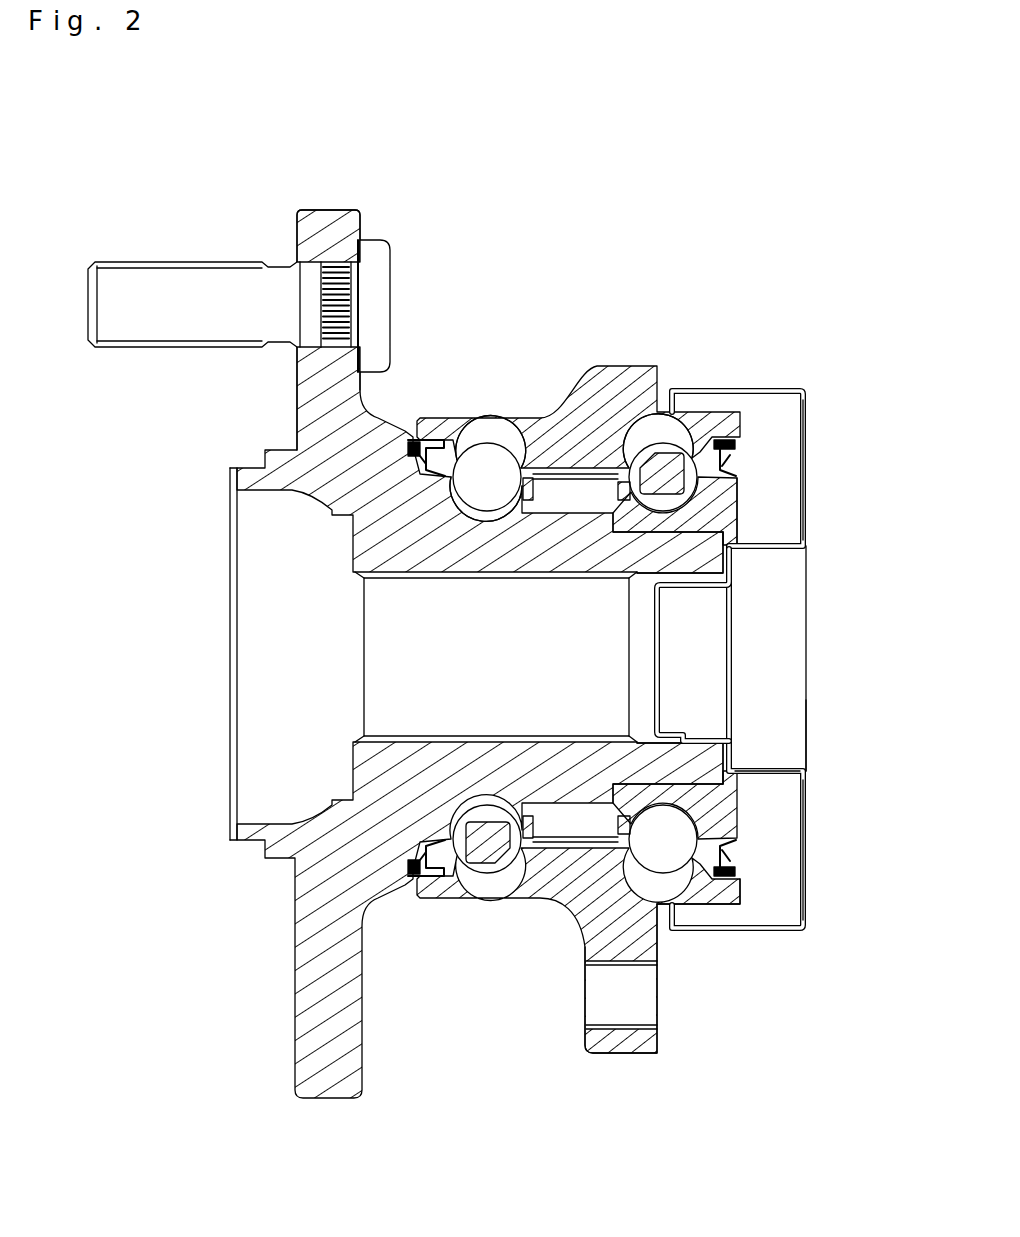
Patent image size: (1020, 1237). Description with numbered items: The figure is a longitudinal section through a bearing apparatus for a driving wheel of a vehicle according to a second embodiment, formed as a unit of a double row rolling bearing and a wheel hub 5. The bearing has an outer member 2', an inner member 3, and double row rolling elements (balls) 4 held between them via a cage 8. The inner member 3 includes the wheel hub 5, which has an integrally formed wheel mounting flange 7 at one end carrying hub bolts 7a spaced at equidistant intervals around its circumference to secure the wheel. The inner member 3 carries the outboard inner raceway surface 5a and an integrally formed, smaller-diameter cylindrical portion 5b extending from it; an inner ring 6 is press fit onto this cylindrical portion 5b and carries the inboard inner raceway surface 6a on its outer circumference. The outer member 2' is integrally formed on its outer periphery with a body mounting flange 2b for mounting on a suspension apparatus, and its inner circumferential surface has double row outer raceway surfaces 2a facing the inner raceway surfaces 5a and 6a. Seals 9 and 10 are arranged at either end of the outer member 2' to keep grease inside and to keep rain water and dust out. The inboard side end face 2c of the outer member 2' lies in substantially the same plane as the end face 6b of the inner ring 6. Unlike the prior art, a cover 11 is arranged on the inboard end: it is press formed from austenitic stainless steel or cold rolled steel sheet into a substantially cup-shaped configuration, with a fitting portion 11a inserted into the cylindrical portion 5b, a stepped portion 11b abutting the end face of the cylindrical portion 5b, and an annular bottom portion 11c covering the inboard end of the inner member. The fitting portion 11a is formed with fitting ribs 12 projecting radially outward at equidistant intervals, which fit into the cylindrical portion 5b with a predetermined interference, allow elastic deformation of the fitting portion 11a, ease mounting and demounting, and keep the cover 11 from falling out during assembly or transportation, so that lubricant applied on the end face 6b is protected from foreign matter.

The outer member 2' is at (578, 684).
The double row outer raceway surfaces 2a is at (478, 450).
The body mounting flange 2b is at (622, 1043).
The inboard side end face 2c is at (737, 903).
The inner member 3 is at (342, 577).
The double row rolling elements 4 is at (633, 863).
The wheel hub 5 is at (380, 518).
The inner raceway surface 5a is at (470, 490).
The cylindrical portion 5b is at (732, 560).
The inner ring 6 is at (720, 514).
The inner raceway surface 6a is at (700, 492).
The end face 6b is at (737, 832).
The wheel mounting flange 7 is at (335, 226).
The hub bolts 7a is at (132, 283).
The cage 8 is at (633, 500).
The seal 9 is at (413, 452).
The seal 10 is at (727, 448).
The cover 11 is at (870, 640).
The fitting portion 11a is at (686, 588).
The stepped portion 11b is at (752, 768).
The annular bottom portion 11c is at (790, 812).
The fitting ribs 12 is at (703, 727).